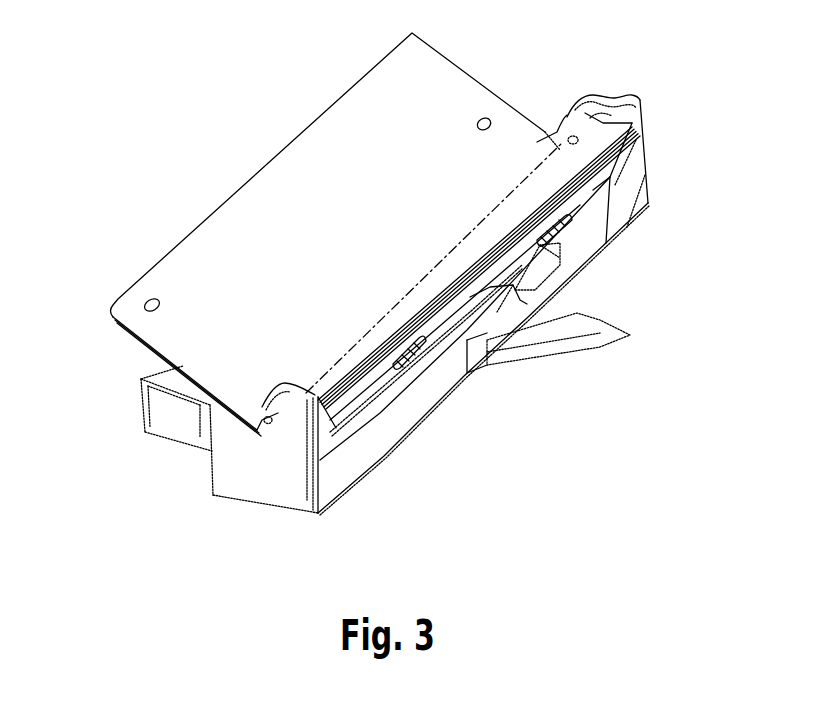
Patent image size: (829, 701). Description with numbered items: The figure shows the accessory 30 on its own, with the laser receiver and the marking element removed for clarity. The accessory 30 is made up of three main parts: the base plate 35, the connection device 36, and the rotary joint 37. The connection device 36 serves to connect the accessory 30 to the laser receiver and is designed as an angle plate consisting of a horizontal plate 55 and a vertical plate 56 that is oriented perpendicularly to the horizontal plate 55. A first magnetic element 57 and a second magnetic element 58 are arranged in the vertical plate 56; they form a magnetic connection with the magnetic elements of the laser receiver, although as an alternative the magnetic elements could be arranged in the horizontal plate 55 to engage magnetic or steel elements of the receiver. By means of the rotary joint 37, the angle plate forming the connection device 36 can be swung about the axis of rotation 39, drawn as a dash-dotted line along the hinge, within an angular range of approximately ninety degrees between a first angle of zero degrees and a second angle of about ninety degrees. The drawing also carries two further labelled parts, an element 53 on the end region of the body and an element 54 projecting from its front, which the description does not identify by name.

The accessory 30 is at (126, 106).
The base plate 35 is at (182, 450).
The connection device 36 is at (517, 63).
The rotary joint 37 is at (626, 82).
The axis of rotation 39 is at (427, 279).
The end wall 53 is at (637, 208).
The latch 54 is at (477, 237).
The horizontal plate 55 is at (430, 85).
The vertical plate 56 is at (352, 412).
The first magnetic element 57 is at (425, 372).
The second magnetic element 58 is at (573, 246).